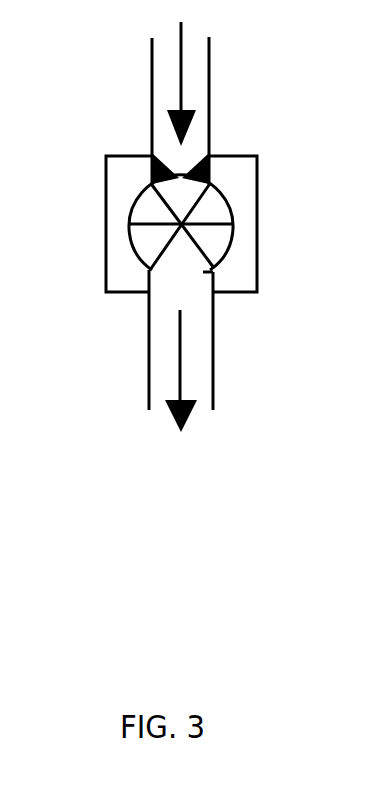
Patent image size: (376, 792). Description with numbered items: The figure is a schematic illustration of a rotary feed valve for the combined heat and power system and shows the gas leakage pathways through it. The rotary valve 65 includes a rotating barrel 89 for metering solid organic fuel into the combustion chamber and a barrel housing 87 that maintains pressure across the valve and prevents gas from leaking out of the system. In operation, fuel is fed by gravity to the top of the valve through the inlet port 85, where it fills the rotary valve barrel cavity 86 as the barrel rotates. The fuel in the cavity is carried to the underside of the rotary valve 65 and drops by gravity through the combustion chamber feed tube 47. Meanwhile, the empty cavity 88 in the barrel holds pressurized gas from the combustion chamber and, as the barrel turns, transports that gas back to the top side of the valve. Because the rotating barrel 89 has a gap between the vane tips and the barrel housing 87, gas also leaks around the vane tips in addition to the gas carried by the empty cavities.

The inlet port 85 is at (197, 148).
The rotary valve 65 is at (249, 168).
The rotary valve barrel cavity 86 is at (227, 215).
The barrel housing 87 is at (242, 258).
The empty cavity 88 is at (140, 241).
The rotating barrel 89 is at (150, 207).
The combustion chamber feed tube 47 is at (162, 387).